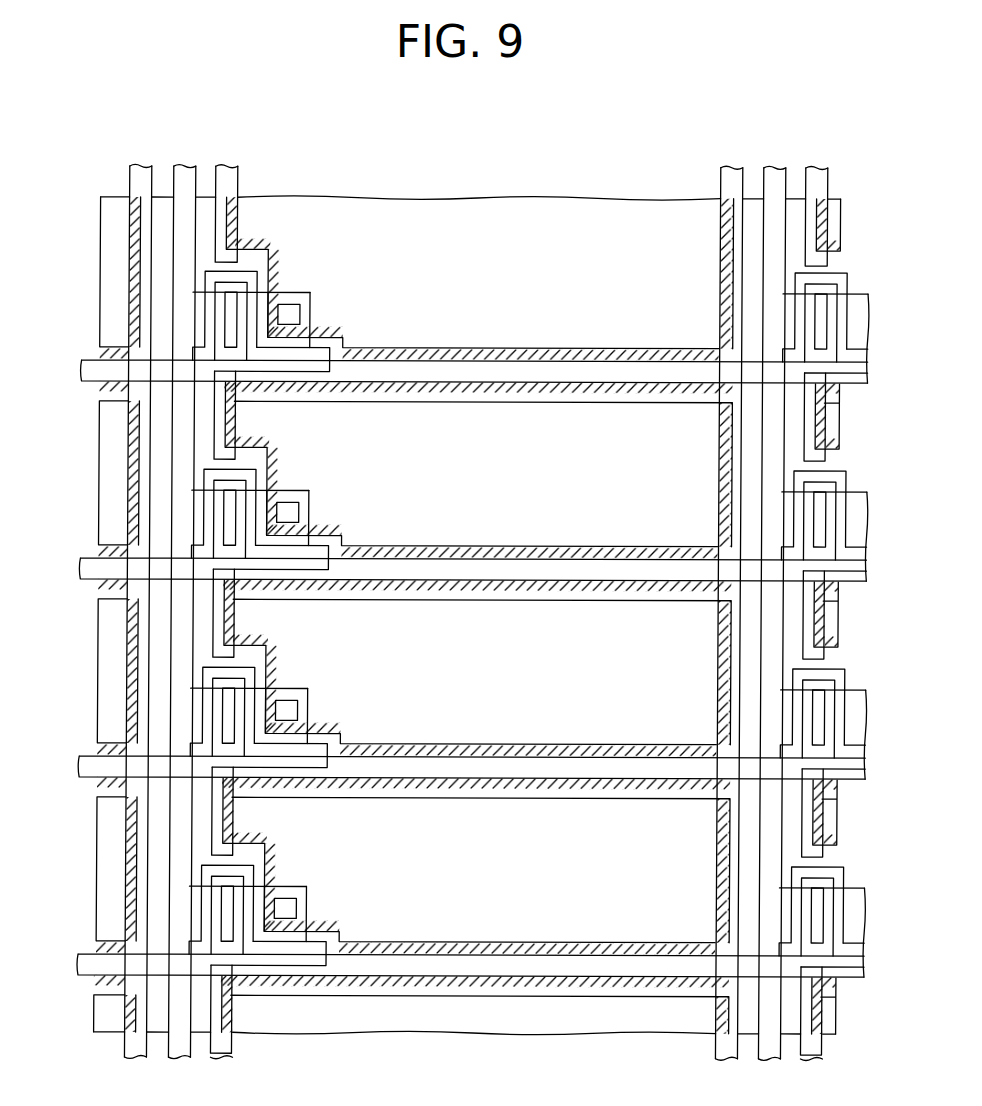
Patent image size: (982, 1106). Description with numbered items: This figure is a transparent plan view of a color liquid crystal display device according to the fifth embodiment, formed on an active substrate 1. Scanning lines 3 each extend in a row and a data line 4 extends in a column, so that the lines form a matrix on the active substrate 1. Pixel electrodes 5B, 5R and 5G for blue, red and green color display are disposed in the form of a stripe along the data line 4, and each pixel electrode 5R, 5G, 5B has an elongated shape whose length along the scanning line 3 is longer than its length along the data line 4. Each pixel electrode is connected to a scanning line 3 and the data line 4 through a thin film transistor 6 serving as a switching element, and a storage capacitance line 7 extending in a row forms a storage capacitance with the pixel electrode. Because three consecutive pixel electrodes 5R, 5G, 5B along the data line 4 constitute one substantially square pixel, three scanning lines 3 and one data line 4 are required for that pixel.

The active substrate 1 is at (624, 186).
The scanning line 3 is at (82, 370).
The data line 4 is at (184, 170).
The pixel electrode for blue 5B is at (516, 274).
The pixel electrode for red 5R is at (516, 472).
The pixel electrode for green 5G is at (516, 670).
The thin film transistor 6 is at (301, 574).
The storage capacitance line 7 is at (142, 170).